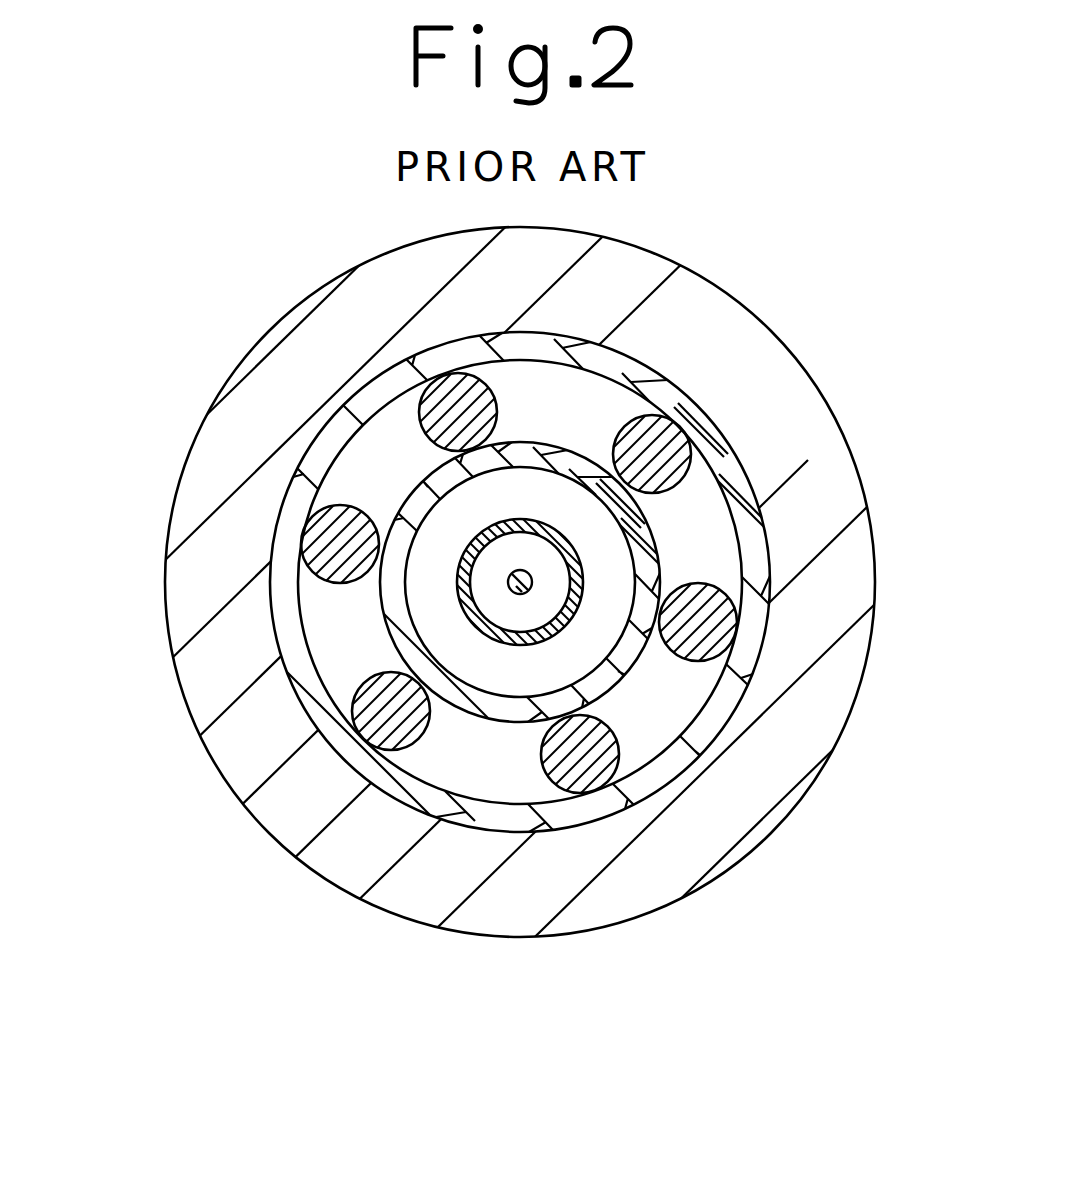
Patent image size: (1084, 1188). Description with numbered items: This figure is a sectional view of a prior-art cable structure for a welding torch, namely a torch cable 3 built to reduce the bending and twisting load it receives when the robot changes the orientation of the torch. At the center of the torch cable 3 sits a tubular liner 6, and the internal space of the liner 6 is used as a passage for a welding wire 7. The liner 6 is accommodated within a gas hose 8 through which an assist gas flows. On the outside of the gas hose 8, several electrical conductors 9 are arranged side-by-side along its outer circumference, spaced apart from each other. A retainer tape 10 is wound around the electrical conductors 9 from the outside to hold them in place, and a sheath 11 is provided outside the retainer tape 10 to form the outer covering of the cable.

The torch cable 3 is at (195, 373).
The liner 6 is at (523, 642).
The welding wire 7 is at (512, 595).
The gas hose 8 is at (627, 663).
The electrical conductors 9 is at (699, 613).
The retainer tape 10 is at (282, 610).
The sheath 11 is at (325, 335).